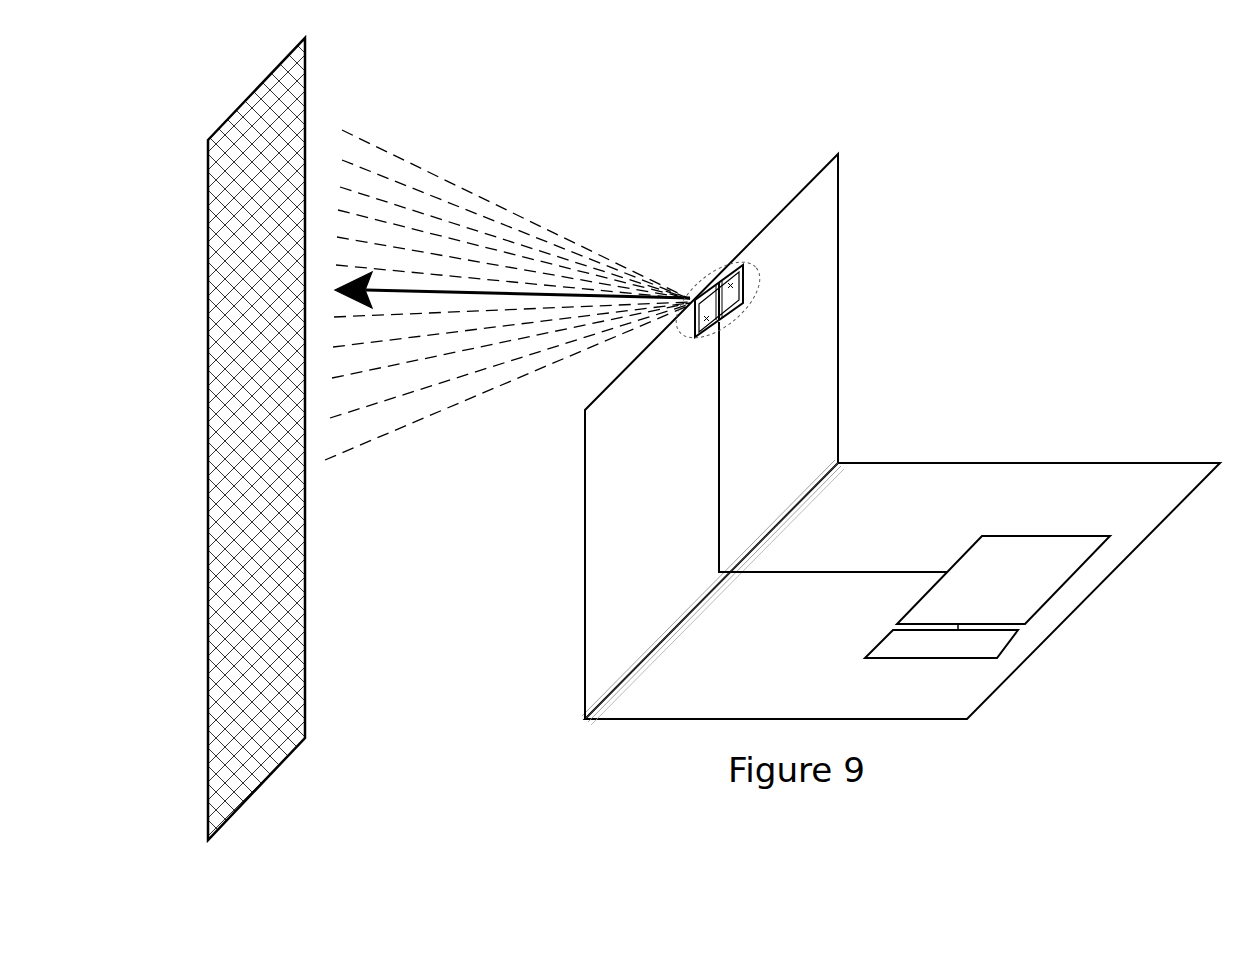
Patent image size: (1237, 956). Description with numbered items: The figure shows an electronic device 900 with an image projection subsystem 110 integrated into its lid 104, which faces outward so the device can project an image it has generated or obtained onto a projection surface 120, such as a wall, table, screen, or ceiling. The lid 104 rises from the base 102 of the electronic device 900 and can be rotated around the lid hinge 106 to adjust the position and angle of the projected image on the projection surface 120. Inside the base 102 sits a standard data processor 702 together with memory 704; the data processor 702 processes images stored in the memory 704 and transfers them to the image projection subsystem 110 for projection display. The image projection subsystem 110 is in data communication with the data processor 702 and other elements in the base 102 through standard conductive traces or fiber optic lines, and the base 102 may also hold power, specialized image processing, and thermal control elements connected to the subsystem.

The base 102 is at (983, 706).
The lid 104 is at (596, 393).
The lid hinge 106 is at (678, 622).
The image projection subsystem 110 is at (760, 255).
The projection surface 120 is at (262, 795).
The data processor 702 is at (1047, 538).
The memory 704 is at (1018, 637).
The electronic device 900 is at (925, 404).